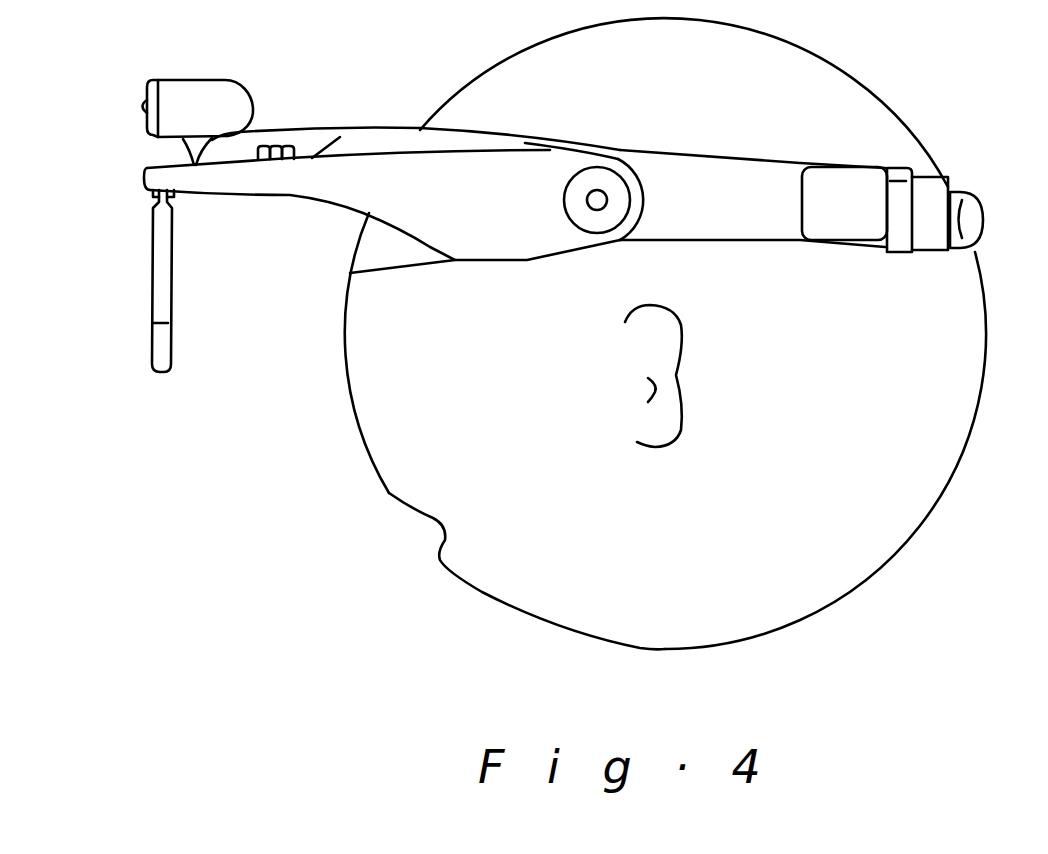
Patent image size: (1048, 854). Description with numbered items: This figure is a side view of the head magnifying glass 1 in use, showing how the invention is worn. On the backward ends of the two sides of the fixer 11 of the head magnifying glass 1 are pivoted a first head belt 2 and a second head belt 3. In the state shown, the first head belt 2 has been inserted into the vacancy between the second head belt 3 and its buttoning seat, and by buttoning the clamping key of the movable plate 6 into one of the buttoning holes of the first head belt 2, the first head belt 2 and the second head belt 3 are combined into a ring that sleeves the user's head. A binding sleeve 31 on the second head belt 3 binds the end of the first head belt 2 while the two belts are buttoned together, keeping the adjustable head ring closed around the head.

The head magnifying glass 1 is at (380, 120).
The fixer 11 is at (289, 182).
The first head belt 2 is at (860, 228).
The second head belt 3 is at (748, 227).
The binding sleeve 31 is at (898, 238).
The movable plate 6 is at (973, 210).